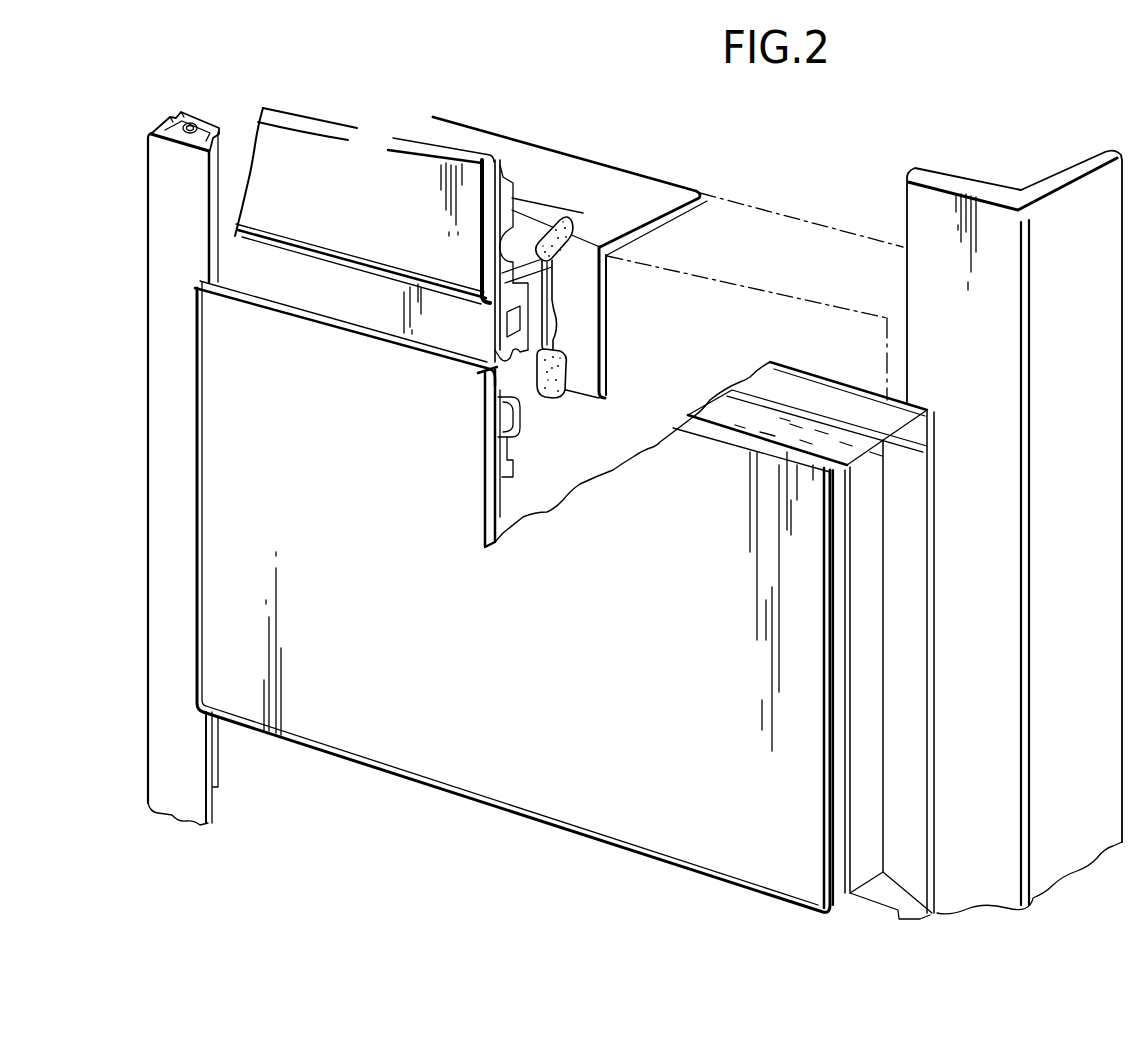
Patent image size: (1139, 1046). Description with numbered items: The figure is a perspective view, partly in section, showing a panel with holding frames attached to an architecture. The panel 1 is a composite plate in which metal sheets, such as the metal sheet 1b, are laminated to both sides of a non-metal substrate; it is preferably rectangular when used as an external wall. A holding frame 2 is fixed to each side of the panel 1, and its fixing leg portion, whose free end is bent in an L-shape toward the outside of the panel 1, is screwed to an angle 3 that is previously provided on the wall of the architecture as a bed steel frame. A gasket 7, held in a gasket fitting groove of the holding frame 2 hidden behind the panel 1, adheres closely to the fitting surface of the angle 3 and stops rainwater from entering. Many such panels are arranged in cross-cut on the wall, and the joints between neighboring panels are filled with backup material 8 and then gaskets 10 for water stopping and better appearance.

The panel 1 is at (498, 512).
The metal sheet 1b is at (351, 734).
The holding frame 2 is at (500, 810).
The angle 3 is at (664, 186).
The gasket 7 is at (570, 214).
The backup material 8 is at (552, 330).
The gasket 10 is at (385, 306).